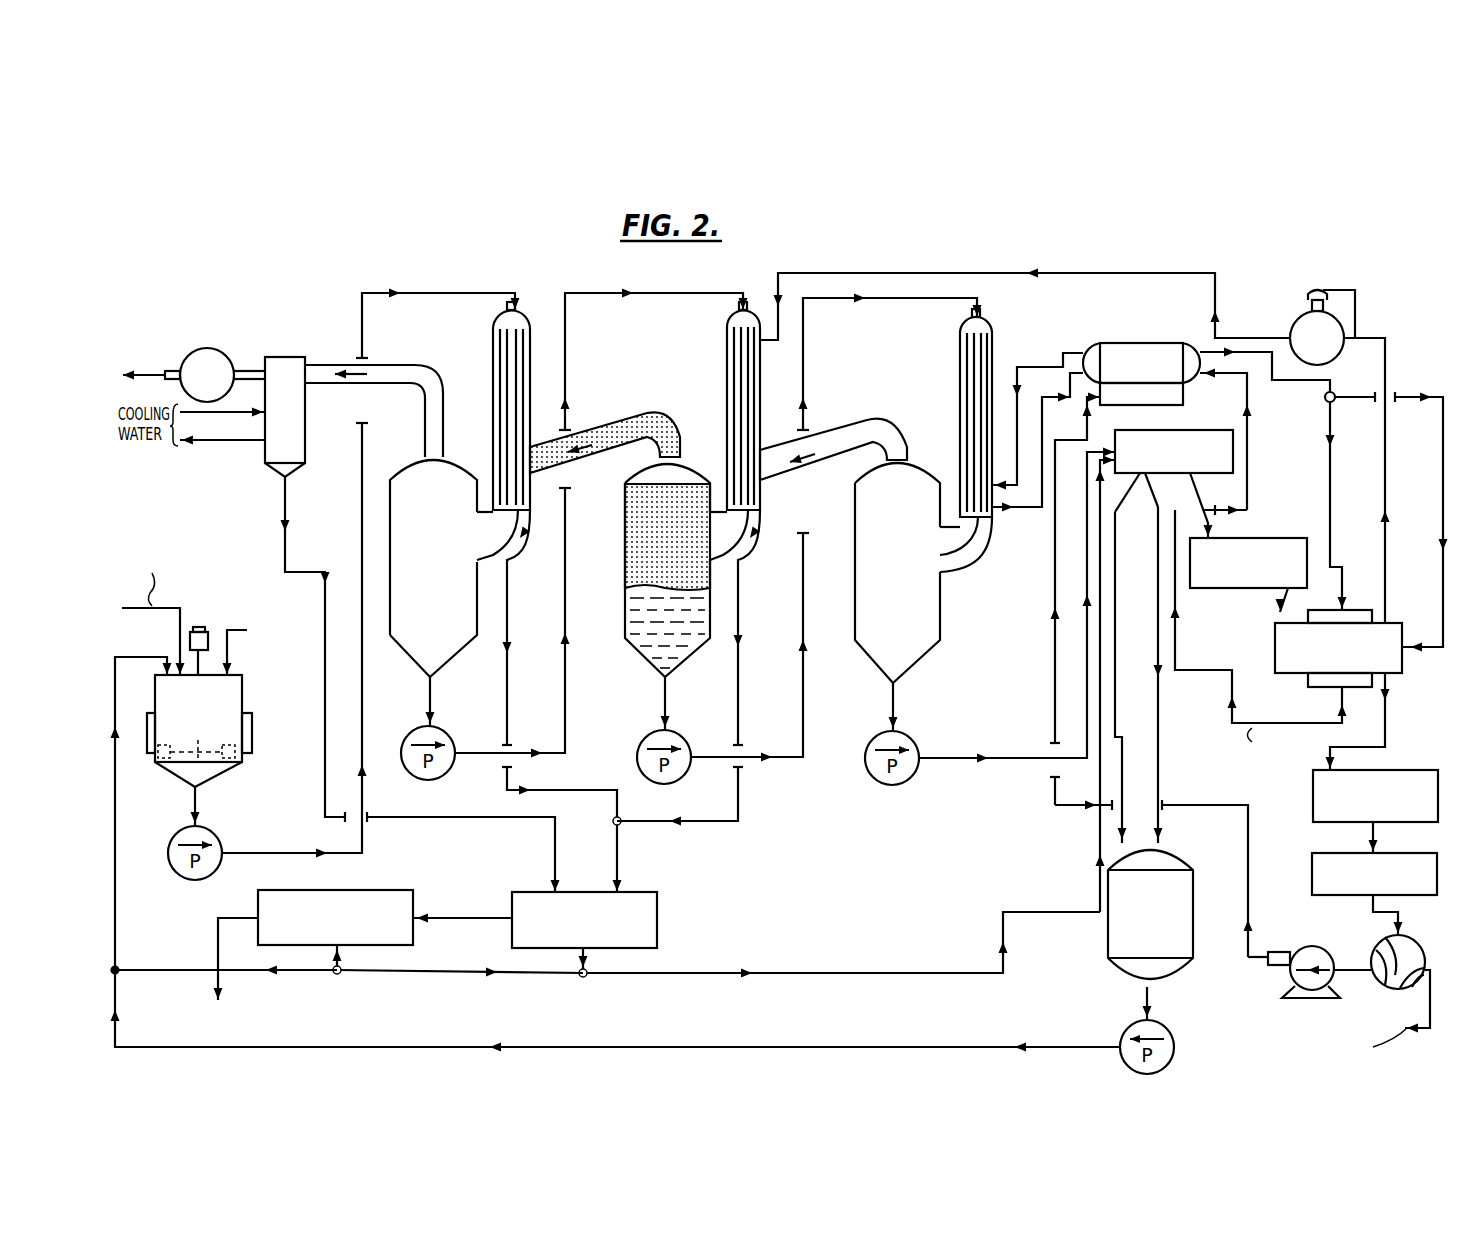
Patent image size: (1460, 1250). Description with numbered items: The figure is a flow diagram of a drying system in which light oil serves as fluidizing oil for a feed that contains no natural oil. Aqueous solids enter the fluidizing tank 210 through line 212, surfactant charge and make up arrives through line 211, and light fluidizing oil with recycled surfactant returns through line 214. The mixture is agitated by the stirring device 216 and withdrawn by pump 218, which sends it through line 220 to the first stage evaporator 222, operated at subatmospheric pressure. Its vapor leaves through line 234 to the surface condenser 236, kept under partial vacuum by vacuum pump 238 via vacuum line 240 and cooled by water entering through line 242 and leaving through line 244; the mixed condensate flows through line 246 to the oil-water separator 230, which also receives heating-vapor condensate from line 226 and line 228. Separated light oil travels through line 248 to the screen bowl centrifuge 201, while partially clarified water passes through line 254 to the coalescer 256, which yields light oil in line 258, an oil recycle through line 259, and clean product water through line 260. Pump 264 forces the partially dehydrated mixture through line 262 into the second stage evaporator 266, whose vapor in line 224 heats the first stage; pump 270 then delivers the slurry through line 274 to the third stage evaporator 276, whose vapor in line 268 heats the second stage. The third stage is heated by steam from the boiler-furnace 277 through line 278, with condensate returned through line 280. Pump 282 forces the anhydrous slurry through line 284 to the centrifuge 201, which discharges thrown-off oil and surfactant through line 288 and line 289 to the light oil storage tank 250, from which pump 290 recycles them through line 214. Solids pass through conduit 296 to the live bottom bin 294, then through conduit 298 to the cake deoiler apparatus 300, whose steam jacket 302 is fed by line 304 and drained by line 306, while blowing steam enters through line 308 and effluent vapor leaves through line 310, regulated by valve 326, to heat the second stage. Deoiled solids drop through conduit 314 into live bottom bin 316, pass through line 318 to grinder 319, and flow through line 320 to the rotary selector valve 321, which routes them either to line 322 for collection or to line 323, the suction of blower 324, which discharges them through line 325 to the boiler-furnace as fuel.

The screen bowl centrifuge 201 is at (1205, 430).
The fluidizing tank 210 is at (242, 692).
The surfactant charge and make up line 211 is at (167, 612).
The aqueous solids feed line 212 is at (230, 655).
The light fluidizing oil and recycled surfactant line 214 is at (120, 707).
The stirring device 216 is at (225, 758).
The pump 218 is at (212, 828).
The line to first stage evaporator 220 is at (425, 293).
The first stage evaporator 222 is at (397, 463).
The mixed steam-light oil vapor line 224 is at (640, 413).
The condensate line 226 is at (560, 788).
The condensate line 228 is at (740, 632).
The oil-water separator 230 is at (660, 913).
The vapor line 234 is at (393, 365).
The surface condenser 236 is at (305, 358).
The vacuum pump 238 is at (200, 343).
The vacuum line 240 is at (250, 370).
The cooling water inlet line 242 is at (243, 413).
The cooling water outlet line 244 is at (250, 441).
The mixed condensate line 246 is at (283, 497).
The light oil line 248 is at (697, 973).
The light oil storage tank 250 is at (1195, 918).
The partially clarified water line 254 is at (487, 915).
The coalescer 256 is at (362, 888).
The coalescer light oil line 258 is at (472, 968).
The oil recycle line 259 is at (165, 968).
The clean product water line 260 is at (217, 920).
The line to second stage evaporator 262 is at (700, 295).
The pump 264 is at (440, 772).
The second stage evaporator 266 is at (625, 598).
The mixed heating vapor line 268 is at (855, 423).
The pump 270 is at (690, 773).
The line to third stage evaporator 274 is at (917, 299).
The third stage evaporator 276 is at (940, 615).
The boiler-furnace 277 is at (1125, 343).
The steam line 278 is at (1037, 365).
The steam condensate line 280 is at (1057, 440).
The pump 282 is at (866, 762).
The anhydrous slurry line 284 is at (960, 756).
The thrown-off material line 288 is at (1100, 822).
The light oil and surfactant line 289 is at (1160, 725).
The pump 290 is at (1175, 1047).
The live bottom bin 294 is at (1262, 537).
The conduit 296 is at (1207, 497).
The conduit 298 is at (1283, 598).
The cake deoiler apparatus 300 is at (1275, 637).
The steam jacket 302 is at (1307, 683).
The steam line 304 is at (1312, 381).
The jacket condensate line 306 is at (1248, 422).
The blowing steam line 308 is at (1386, 522).
The effluent vapor line 310 is at (1070, 275).
The conduit 314 is at (1387, 727).
The live bottom bin 316 is at (1312, 782).
The line to grinder 318 is at (1373, 832).
The grinder 319 is at (1312, 863).
The line to selector valve 320 is at (1373, 907).
The rotary selector valve 321 is at (1387, 986).
The product line 322 is at (1433, 1002).
The blower suction line 323 is at (1348, 968).
The blower 324 is at (1288, 975).
The fuel line 325 is at (1068, 393).
The pressure-sensing valve 326 is at (1293, 320).